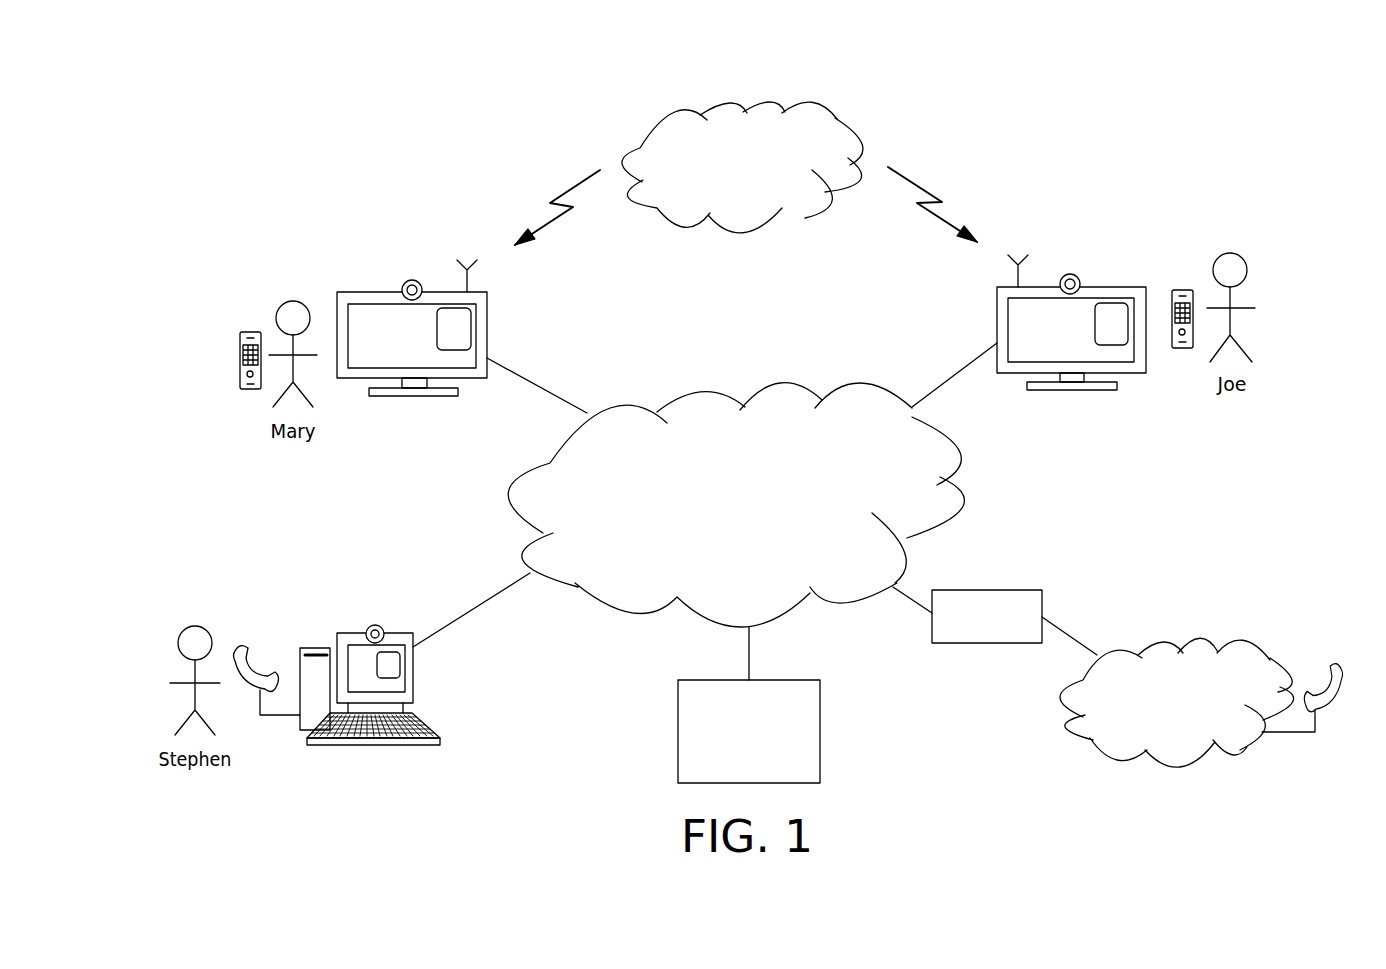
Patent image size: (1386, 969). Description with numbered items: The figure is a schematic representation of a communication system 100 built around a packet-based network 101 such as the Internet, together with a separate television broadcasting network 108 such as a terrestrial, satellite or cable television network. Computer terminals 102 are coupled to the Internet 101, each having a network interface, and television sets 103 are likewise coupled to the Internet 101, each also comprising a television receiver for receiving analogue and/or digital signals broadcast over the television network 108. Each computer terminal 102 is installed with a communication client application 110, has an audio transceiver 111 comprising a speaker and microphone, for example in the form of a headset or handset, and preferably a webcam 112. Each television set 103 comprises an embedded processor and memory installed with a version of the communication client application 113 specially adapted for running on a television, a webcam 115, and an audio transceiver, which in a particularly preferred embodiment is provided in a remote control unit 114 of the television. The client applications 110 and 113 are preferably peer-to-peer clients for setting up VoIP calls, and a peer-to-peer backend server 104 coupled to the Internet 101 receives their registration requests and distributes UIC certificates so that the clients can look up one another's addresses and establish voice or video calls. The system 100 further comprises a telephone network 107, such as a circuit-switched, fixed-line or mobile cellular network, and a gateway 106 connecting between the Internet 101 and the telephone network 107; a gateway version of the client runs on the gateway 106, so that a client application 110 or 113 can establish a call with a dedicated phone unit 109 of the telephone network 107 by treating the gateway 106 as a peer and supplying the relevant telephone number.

The communication system 100 is at (488, 136).
The packet-based network 101 is at (785, 382).
The computer terminal 102 is at (373, 745).
The television set 103 is at (363, 292).
The peer-to-peer backend server 104 is at (678, 732).
The gateway 106 is at (988, 590).
The telephone network 107 is at (1162, 643).
The television broadcasting network 108 is at (724, 102).
The dedicated phone unit 109 is at (1330, 663).
The communication client application 110 is at (400, 665).
The audio transceiver 111 is at (250, 648).
The webcam 112 is at (375, 625).
The communication client application 113 is at (1118, 303).
The remote control unit 114 is at (1182, 290).
The webcam 115 is at (1070, 274).